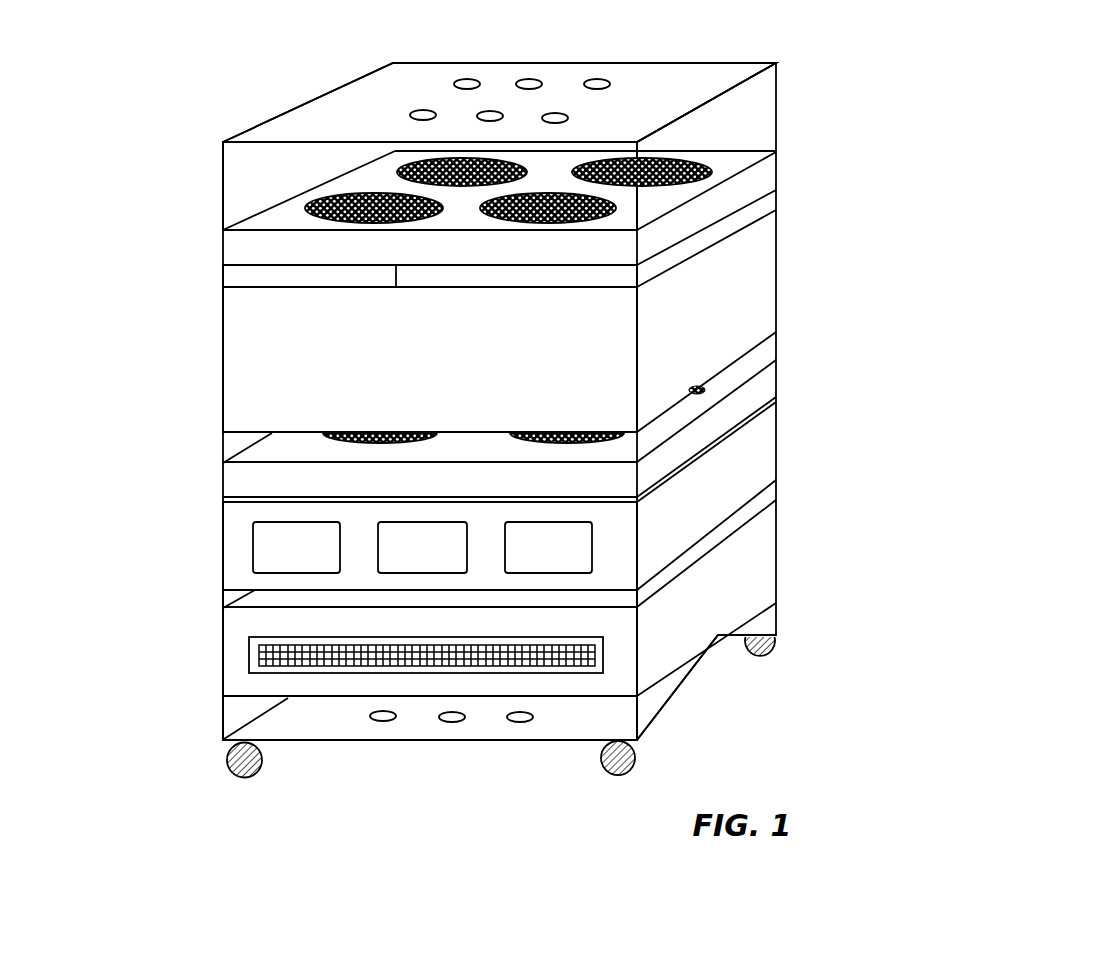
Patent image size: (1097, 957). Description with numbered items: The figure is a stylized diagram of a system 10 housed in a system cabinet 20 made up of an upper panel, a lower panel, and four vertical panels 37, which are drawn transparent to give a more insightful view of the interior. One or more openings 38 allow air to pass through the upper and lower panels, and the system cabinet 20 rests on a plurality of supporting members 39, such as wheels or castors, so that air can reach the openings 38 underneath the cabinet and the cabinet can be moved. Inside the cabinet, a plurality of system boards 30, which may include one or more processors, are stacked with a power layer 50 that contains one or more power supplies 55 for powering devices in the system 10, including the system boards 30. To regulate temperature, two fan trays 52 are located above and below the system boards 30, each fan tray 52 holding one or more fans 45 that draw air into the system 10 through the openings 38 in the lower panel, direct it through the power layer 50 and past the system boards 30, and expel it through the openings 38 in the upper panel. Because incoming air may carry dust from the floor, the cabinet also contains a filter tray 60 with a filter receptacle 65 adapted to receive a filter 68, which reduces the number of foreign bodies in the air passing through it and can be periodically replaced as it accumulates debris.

The system 10 is at (956, 320).
The system cabinet 20 is at (777, 98).
The system boards 30 is at (763, 265).
The vertical panels 37 is at (235, 274).
The openings 38 is at (467, 80).
The supporting members 39 is at (635, 758).
The fans 45 is at (397, 173).
The power layer 50 is at (747, 477).
The fan trays 52 is at (727, 195).
The power supplies 55 is at (378, 530).
The filter tray 60 is at (745, 565).
The filter receptacle 65 is at (249, 657).
The filter 68 is at (347, 667).